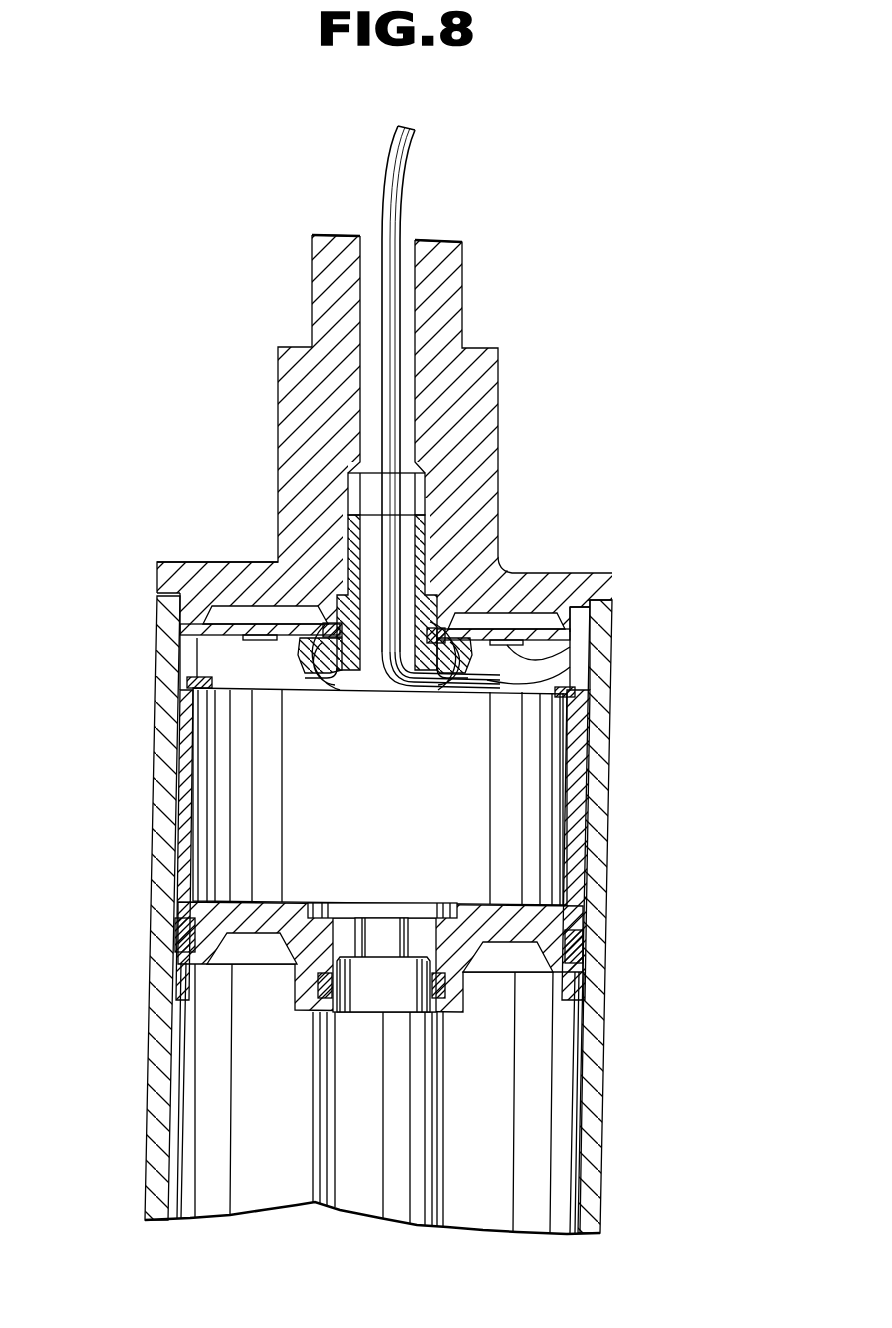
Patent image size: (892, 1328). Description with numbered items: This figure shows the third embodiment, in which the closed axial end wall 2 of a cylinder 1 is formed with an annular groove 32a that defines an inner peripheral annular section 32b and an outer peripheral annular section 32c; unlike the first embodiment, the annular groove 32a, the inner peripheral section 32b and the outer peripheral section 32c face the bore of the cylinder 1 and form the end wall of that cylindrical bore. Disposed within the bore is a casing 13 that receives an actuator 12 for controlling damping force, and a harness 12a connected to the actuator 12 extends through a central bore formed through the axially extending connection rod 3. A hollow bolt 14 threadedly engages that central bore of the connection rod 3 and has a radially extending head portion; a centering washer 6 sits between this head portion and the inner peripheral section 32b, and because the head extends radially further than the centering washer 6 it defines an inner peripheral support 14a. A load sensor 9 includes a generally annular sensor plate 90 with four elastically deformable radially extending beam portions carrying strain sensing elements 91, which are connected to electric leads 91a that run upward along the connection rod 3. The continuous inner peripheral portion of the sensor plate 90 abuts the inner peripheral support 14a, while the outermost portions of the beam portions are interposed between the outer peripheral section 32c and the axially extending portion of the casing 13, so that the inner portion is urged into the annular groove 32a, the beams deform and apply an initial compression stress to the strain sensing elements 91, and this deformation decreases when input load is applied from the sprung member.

The cylinder 1 is at (608, 880).
The closed axial end wall 2 is at (246, 558).
The connection rod 3 is at (455, 300).
The centering washer 6 is at (452, 598).
The load sensor 9 is at (534, 614).
The sensor plate 90 is at (565, 627).
The strain sensing elements 91 is at (570, 647).
The electric leads 91a is at (570, 667).
The actuator 12 is at (545, 775).
The harness 12a is at (397, 178).
The casing 13 is at (185, 828).
The hollow bolt 14 is at (442, 690).
The inner peripheral support 14a is at (286, 667).
The annular groove 32a is at (236, 616).
The inner peripheral annular section 32b is at (330, 668).
The outer peripheral annular section 32c is at (563, 640).